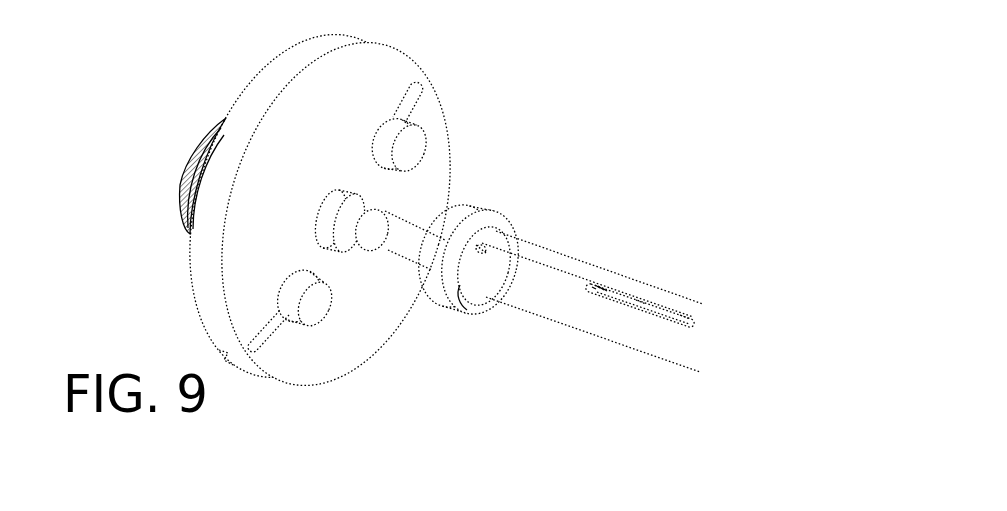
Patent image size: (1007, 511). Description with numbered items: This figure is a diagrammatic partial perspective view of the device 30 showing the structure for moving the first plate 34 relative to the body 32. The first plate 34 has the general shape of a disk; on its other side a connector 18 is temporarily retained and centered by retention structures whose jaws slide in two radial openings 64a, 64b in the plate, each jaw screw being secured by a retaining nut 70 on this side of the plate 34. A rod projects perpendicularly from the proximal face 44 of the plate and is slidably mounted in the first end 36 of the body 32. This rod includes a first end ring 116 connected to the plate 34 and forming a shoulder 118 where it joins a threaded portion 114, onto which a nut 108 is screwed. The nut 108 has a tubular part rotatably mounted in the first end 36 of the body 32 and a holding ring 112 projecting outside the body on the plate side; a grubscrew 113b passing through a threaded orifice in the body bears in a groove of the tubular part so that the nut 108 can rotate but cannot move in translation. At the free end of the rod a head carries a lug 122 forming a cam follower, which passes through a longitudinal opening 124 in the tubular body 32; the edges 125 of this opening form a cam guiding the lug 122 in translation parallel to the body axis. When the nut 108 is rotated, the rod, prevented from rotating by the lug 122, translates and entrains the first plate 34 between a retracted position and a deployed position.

The assembly 30 is at (627, 80).
The first plate 34 is at (235, 89).
The proximal face 44 is at (301, 106).
The connector 18 is at (190, 163).
The retaining nut 70 is at (416, 141).
The radial opening 64a is at (410, 106).
The radial opening 64b is at (267, 325).
The first end ring 116 is at (326, 231).
The shoulder 118 is at (360, 252).
The threaded portion 114 is at (407, 221).
The holding ring 112 is at (443, 293).
The nut 108 is at (489, 205).
The grubscrew 113b is at (484, 247).
The first end 36 is at (483, 308).
The body 32 is at (675, 364).
The lug 122 is at (598, 287).
The longitudinal opening 124 is at (668, 307).
The edges 125 is at (685, 318).